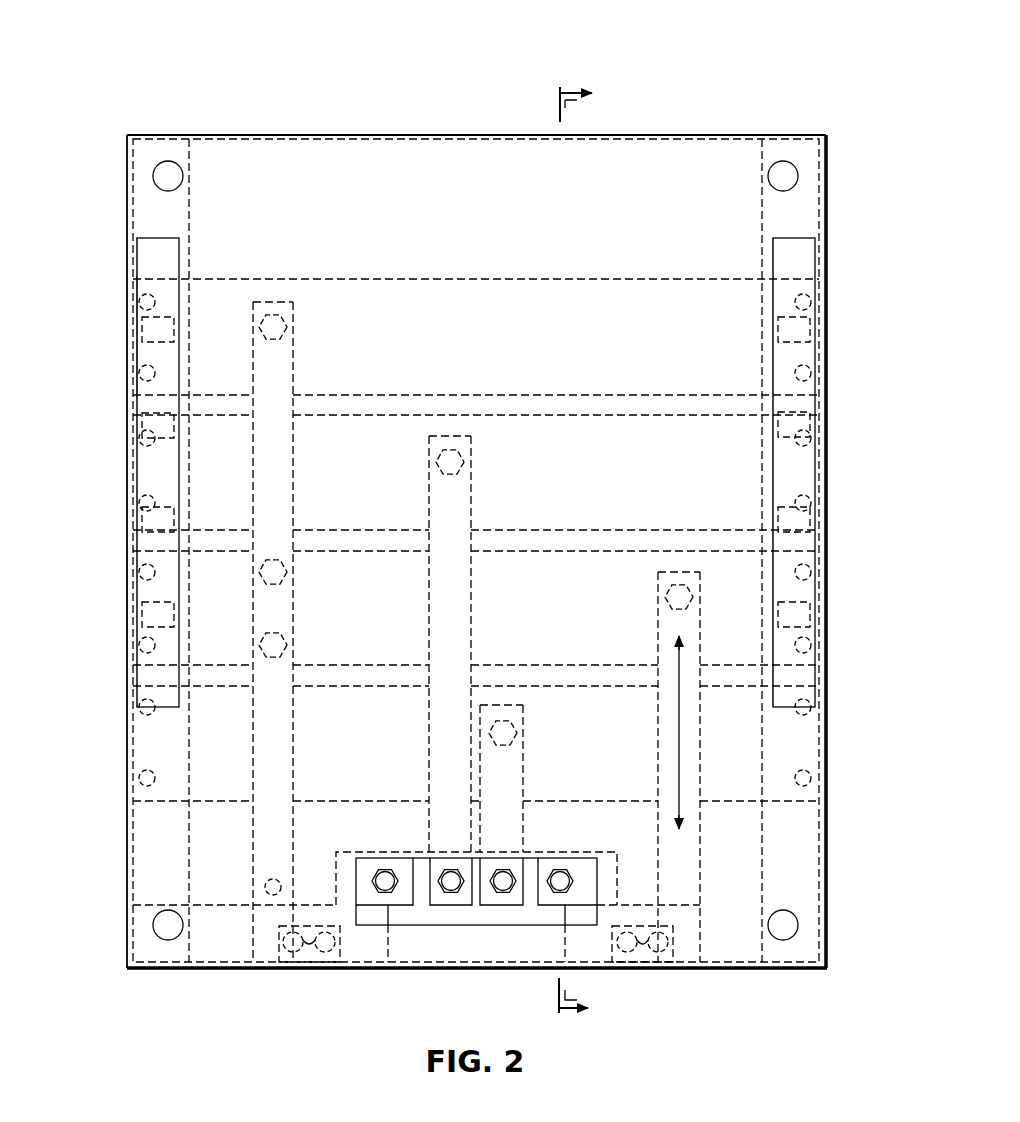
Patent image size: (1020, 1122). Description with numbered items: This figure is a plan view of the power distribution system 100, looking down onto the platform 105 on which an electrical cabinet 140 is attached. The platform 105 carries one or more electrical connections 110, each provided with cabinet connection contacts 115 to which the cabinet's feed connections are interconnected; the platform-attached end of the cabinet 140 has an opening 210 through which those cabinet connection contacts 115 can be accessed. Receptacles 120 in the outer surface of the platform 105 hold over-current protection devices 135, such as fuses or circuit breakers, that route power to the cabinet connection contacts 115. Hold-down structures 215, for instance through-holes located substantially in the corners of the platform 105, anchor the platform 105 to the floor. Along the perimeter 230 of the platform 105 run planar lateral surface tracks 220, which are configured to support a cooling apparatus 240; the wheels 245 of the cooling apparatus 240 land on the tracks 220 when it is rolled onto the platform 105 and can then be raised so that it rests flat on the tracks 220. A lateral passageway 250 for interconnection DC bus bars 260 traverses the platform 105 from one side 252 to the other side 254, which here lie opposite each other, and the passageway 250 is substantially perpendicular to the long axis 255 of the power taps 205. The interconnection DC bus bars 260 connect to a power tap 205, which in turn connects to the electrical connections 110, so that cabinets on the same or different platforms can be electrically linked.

The power distribution system 100 is at (318, 59).
The platform 105 is at (753, 994).
The electrical connection 110 is at (617, 882).
The cabinet connection contact 115 is at (405, 870).
The receptacle 120 is at (313, 913).
The over-current protection device 135 is at (280, 947).
The electrical cabinet 140 is at (190, 222).
The power tap 205 is at (658, 750).
The opening 210 is at (476, 884).
The hold-down structure 215 is at (790, 170).
The planar lateral surface track 220 is at (192, 128).
The perimeter 230 is at (127, 196).
The cooling apparatus 240 is at (815, 466).
The wheel 245 is at (162, 316).
The lateral passageway 250 is at (114, 276).
The side 252 is at (114, 589).
The other side 254 is at (837, 427).
The long axis 255 is at (679, 724).
The interconnection DC bus bar 260 is at (456, 350).